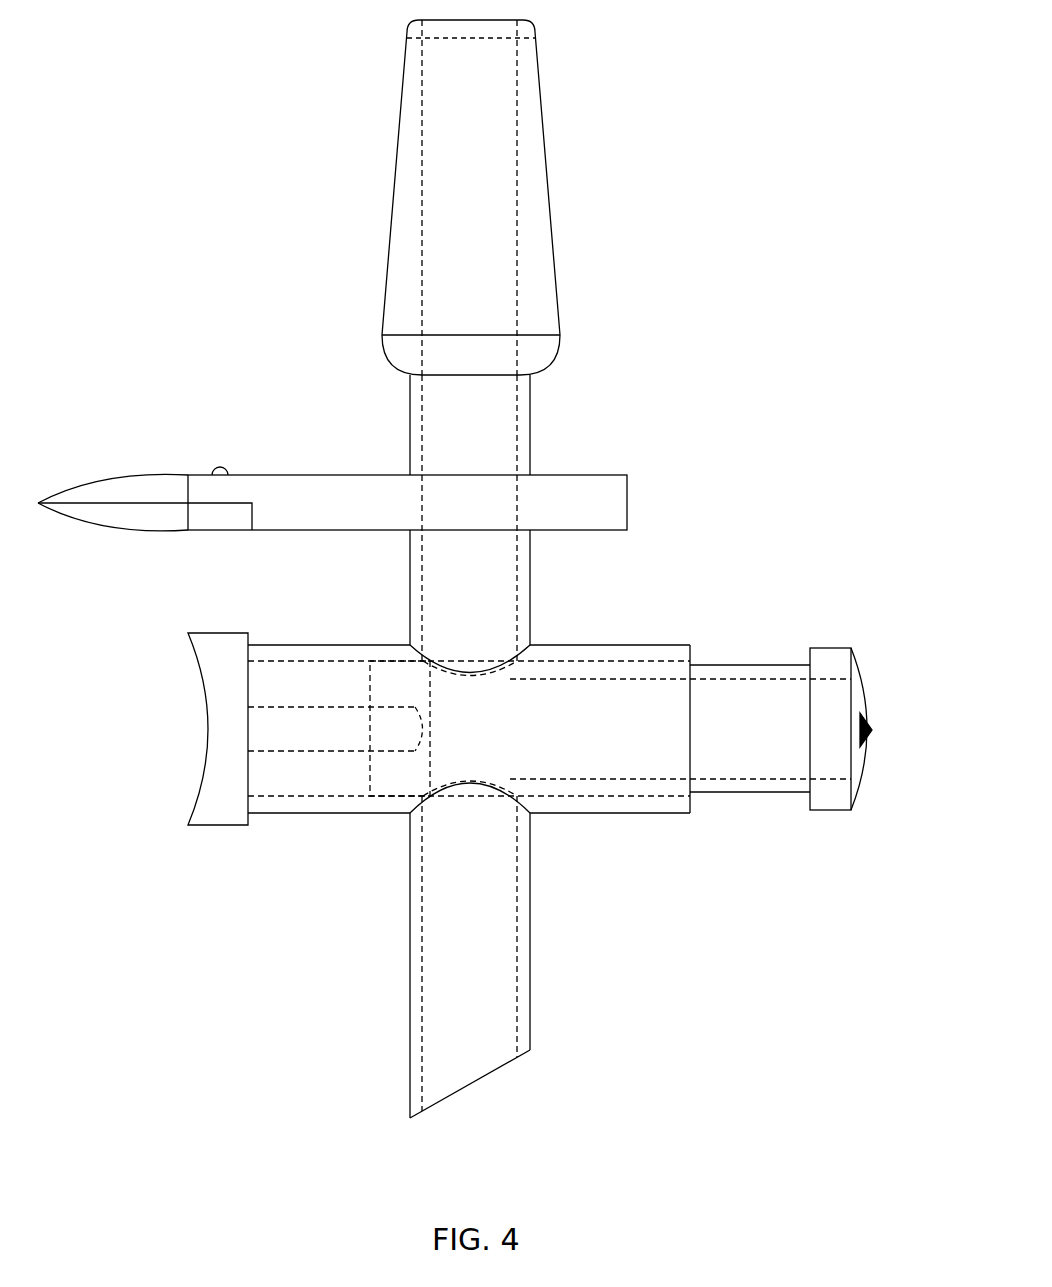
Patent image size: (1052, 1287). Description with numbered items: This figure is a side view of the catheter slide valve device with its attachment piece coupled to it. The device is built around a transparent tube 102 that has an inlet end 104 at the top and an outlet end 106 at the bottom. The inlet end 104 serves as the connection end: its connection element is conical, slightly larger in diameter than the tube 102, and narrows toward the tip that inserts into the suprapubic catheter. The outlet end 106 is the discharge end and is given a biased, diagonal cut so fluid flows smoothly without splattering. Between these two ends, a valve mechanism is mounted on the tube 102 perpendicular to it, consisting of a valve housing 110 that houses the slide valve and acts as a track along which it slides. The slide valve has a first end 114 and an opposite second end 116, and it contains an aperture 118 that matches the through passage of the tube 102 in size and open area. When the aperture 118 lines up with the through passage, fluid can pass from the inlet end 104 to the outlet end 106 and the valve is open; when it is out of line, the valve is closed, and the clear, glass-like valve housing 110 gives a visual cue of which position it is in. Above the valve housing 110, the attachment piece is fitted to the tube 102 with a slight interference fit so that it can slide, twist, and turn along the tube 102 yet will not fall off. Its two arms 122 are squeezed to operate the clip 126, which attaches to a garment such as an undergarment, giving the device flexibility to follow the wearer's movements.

The transparent tube 102 is at (512, 428).
The inlet end 104 is at (545, 162).
The outlet end 106 is at (410, 1010).
The valve housing 110 is at (330, 643).
The first end 114 is at (857, 690).
The second end 116 is at (200, 682).
The aperture 118 is at (475, 770).
The arms 122 is at (317, 513).
The clip 126 is at (118, 520).